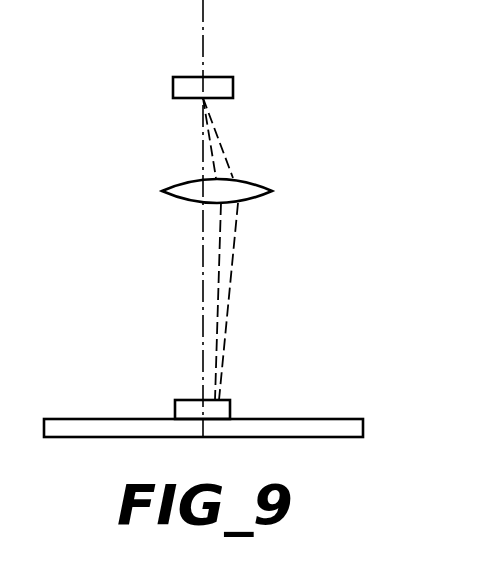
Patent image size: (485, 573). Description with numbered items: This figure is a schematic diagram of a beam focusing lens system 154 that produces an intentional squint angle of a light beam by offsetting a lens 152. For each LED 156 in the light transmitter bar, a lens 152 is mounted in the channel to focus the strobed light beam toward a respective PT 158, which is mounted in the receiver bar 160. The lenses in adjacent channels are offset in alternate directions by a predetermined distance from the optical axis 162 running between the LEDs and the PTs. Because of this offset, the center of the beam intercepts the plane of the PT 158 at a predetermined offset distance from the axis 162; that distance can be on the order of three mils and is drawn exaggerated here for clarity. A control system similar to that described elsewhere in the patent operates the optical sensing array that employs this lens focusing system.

The lens 152 is at (252, 198).
The beam focusing lens system 154 is at (128, 231).
The LED 156 is at (218, 77).
The PT 158 is at (173, 407).
The receiver bar 160 is at (307, 418).
The optical axis 162 is at (200, 22).